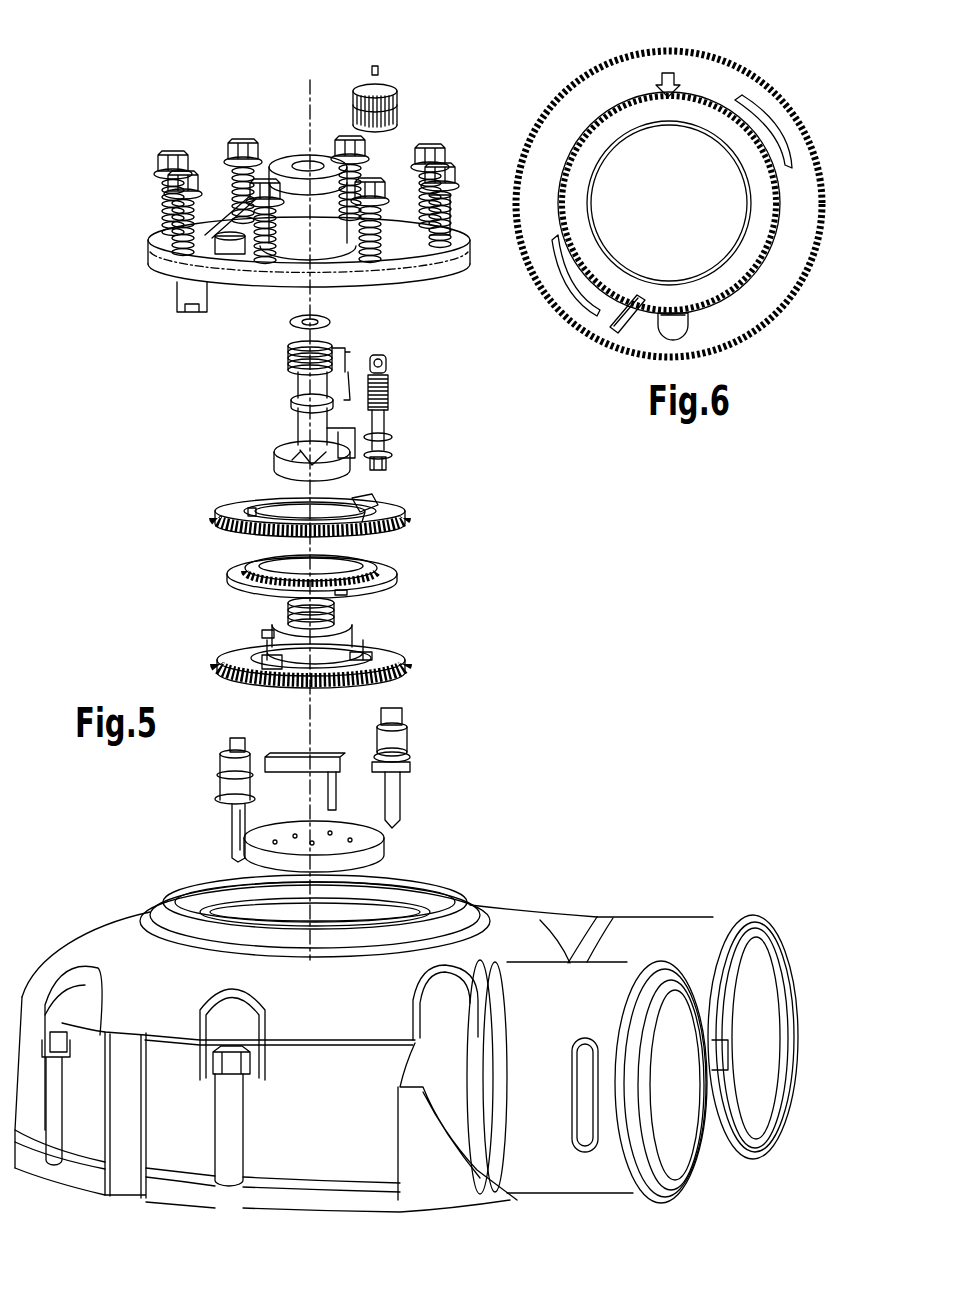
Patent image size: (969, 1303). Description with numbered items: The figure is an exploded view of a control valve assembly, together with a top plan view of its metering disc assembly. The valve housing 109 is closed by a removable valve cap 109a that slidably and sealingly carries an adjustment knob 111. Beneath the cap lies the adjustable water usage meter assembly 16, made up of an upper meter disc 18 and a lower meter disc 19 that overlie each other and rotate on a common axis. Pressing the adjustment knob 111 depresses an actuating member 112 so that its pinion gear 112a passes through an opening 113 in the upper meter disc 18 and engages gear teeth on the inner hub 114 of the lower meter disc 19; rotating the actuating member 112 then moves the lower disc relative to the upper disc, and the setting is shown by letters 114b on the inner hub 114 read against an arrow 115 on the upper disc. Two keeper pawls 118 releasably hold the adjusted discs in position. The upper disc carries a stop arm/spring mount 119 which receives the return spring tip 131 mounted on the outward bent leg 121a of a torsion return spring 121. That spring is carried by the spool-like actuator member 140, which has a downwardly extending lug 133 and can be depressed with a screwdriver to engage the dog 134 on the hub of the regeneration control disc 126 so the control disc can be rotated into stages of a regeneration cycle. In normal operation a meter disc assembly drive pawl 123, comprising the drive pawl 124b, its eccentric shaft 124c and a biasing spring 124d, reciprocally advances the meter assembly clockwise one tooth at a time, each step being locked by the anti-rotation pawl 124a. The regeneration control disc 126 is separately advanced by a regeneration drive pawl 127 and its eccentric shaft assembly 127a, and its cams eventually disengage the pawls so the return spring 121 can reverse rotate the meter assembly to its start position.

In FIG. 6, the water usage meter assembly 16 is at (538, 82).
In FIG. 5, the upper meter disc 18 is at (395, 520).
In FIG. 6, the upper meter disc 18 is at (780, 285).
In FIG. 5, the lower meter disc 19 is at (390, 578).
In FIG. 5, the valve housing 109 is at (58, 945).
In FIG. 5, the valve cap 109a is at (437, 268).
In FIG. 5, the adjustment knob 111 is at (396, 114).
In FIG. 5, the actuating member 112 is at (380, 426).
In FIG. 5, the pinion gear 112a is at (386, 465).
In FIG. 6, the opening 113 is at (673, 327).
In FIG. 6, the inner hub 114 is at (705, 110).
In FIG. 6, the letters 114b is at (600, 250).
In FIG. 6, the arrow 115 is at (672, 95).
In FIG. 6, the keeper pawls 118 is at (772, 165).
In FIG. 5, the stop arm/spring mount 119 is at (385, 493).
In FIG. 6, the stop arm/spring mount 119 is at (628, 305).
In FIG. 5, the return spring 121 is at (288, 358).
In FIG. 5, the leg 121a is at (352, 380).
In FIG. 5, the meter disc assembly drive pawl 123 is at (420, 795).
In FIG. 5, the anti-rotation pawl 124a is at (300, 760).
In FIG. 5, the drive pawl 124b is at (405, 740).
In FIG. 5, the eccentric shaft 124c is at (398, 710).
In FIG. 5, the biasing spring 124d is at (418, 757).
In FIG. 5, the regeneration control disc 126 is at (412, 660).
In FIG. 5, the regeneration drive pawl 127 is at (215, 755).
In FIG. 5, the eccentric shaft assembly 127a is at (238, 738).
In FIG. 5, the return spring tip 131 is at (345, 430).
In FIG. 5, the lug 133 is at (305, 470).
In FIG. 5, the dog 134 is at (272, 638).
In FIG. 5, the actuator member 140 is at (305, 390).